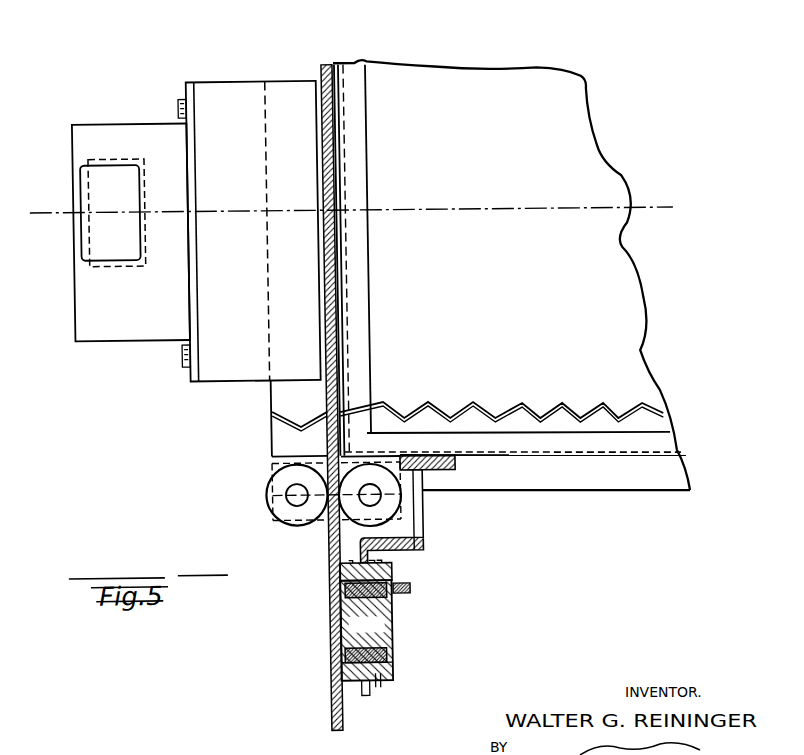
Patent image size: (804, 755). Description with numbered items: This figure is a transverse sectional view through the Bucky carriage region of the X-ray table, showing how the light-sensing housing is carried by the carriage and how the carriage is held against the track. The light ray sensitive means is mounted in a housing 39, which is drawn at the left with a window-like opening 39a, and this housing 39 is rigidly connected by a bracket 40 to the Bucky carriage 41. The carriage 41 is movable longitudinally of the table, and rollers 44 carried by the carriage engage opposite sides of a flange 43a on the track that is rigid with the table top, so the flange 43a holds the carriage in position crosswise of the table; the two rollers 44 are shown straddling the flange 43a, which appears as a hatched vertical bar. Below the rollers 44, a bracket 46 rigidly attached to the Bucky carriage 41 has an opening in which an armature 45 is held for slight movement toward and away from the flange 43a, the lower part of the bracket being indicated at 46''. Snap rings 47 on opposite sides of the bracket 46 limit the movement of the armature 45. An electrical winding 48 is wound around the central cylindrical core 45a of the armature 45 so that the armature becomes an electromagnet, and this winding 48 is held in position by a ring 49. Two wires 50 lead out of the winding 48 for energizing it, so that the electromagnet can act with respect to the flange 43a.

The housing 39 is at (130, 337).
The window opening 39a is at (84, 226).
The bracket 40 is at (232, 380).
The Bucky carriage 41 is at (541, 458).
The flange 43a is at (324, 548).
The rollers 44 is at (383, 477).
The armature 45 is at (389, 567).
The central cylindrical core 45a is at (366, 630).
The bracket 46 is at (408, 508).
The bracket end plate 46'' is at (384, 660).
The snap rings 47 is at (360, 695).
The electrical winding 48 is at (388, 643).
The ring 49 is at (341, 600).
The wires 50 is at (407, 590).